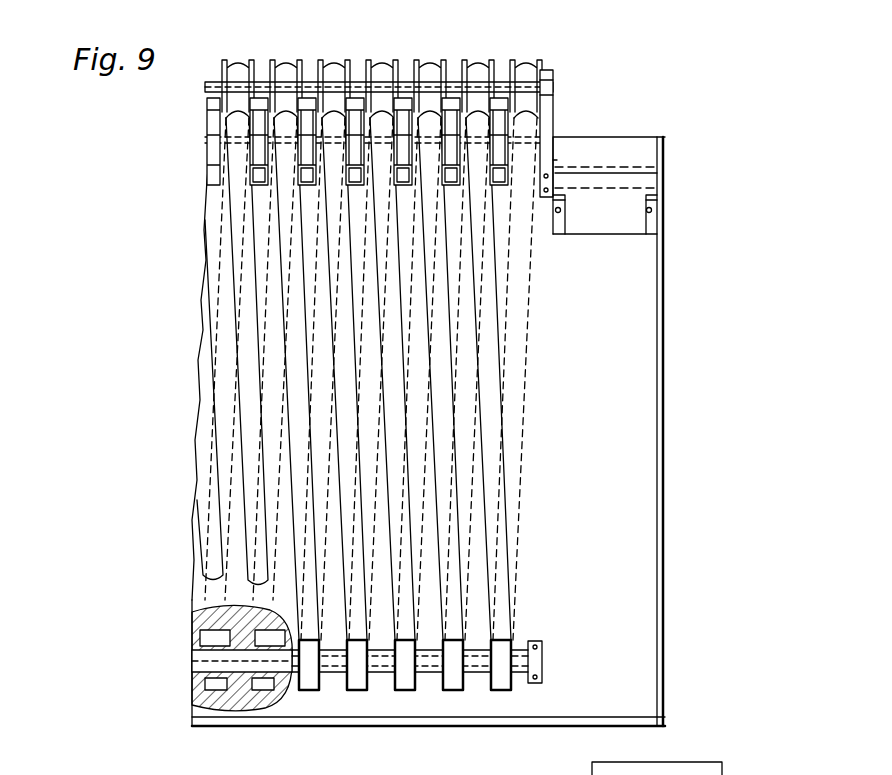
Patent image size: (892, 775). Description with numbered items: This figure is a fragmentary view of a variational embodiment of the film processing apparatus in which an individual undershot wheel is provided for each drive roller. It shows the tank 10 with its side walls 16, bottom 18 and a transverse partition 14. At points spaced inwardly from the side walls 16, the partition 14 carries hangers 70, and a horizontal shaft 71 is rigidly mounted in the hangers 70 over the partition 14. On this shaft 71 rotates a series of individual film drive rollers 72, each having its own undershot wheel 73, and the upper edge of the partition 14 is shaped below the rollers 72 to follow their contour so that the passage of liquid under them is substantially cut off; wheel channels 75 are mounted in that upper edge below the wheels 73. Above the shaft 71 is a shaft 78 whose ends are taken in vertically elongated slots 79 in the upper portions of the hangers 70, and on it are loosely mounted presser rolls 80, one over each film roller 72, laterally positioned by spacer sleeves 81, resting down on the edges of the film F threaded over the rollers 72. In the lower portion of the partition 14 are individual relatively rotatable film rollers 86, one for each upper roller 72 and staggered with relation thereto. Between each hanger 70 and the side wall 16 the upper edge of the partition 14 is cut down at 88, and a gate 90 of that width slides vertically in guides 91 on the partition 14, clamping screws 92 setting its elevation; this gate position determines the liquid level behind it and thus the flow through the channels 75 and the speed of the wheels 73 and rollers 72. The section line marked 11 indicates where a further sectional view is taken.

The tank 10 is at (668, 378).
The section line 11 is at (625, 110).
The transverse partition 14 is at (630, 352).
The side wall 16 is at (660, 313).
The bottom 18 is at (442, 726).
The hanger 70 is at (552, 110).
The horizontal shaft 71 is at (553, 160).
The film drive roller 72 is at (278, 190).
The undershot wheel 73 is at (305, 105).
The wheel channel 75 is at (510, 180).
The shaft 78 is at (258, 82).
The vertically elongated slot 79 is at (556, 78).
The presser roll 80 is at (332, 72).
The spacer sleeve 81 is at (432, 80).
The film roller 86 is at (265, 640).
The lowered edge 88 is at (628, 192).
The gate 90 is at (640, 231).
The guide 91 is at (650, 216).
The clamping screw 92 is at (652, 210).
The film F is at (492, 432).